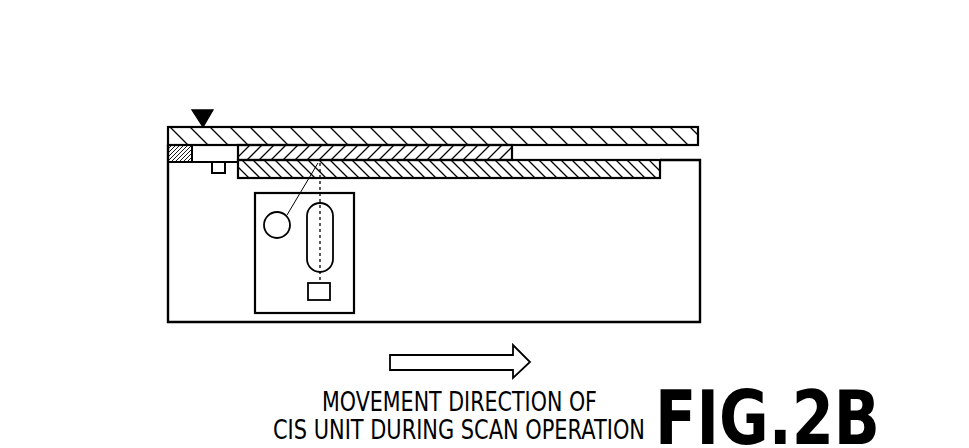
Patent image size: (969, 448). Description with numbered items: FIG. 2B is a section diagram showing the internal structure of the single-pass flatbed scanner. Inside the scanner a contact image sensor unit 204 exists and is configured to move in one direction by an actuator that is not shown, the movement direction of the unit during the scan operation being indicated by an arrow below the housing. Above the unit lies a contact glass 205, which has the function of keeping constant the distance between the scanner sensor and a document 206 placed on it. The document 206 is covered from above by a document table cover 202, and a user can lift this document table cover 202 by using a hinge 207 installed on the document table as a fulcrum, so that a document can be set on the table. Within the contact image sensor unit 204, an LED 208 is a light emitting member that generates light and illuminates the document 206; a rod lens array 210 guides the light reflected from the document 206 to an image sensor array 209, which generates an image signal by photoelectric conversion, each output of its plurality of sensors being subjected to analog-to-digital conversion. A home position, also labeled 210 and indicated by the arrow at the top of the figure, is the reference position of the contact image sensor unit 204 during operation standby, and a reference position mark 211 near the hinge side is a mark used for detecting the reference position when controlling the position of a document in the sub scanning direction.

The document table cover 202 is at (458, 127).
The contact image sensor (CIS) unit 204 is at (355, 202).
The contact glass 205 is at (647, 158).
The document 206 is at (382, 148).
The hinge 207 is at (168, 155).
The LED 208 is at (265, 230).
The image sensor array 209 is at (330, 292).
The rod lens array 210 is at (203, 110).
The reference position mark 211 is at (212, 169).